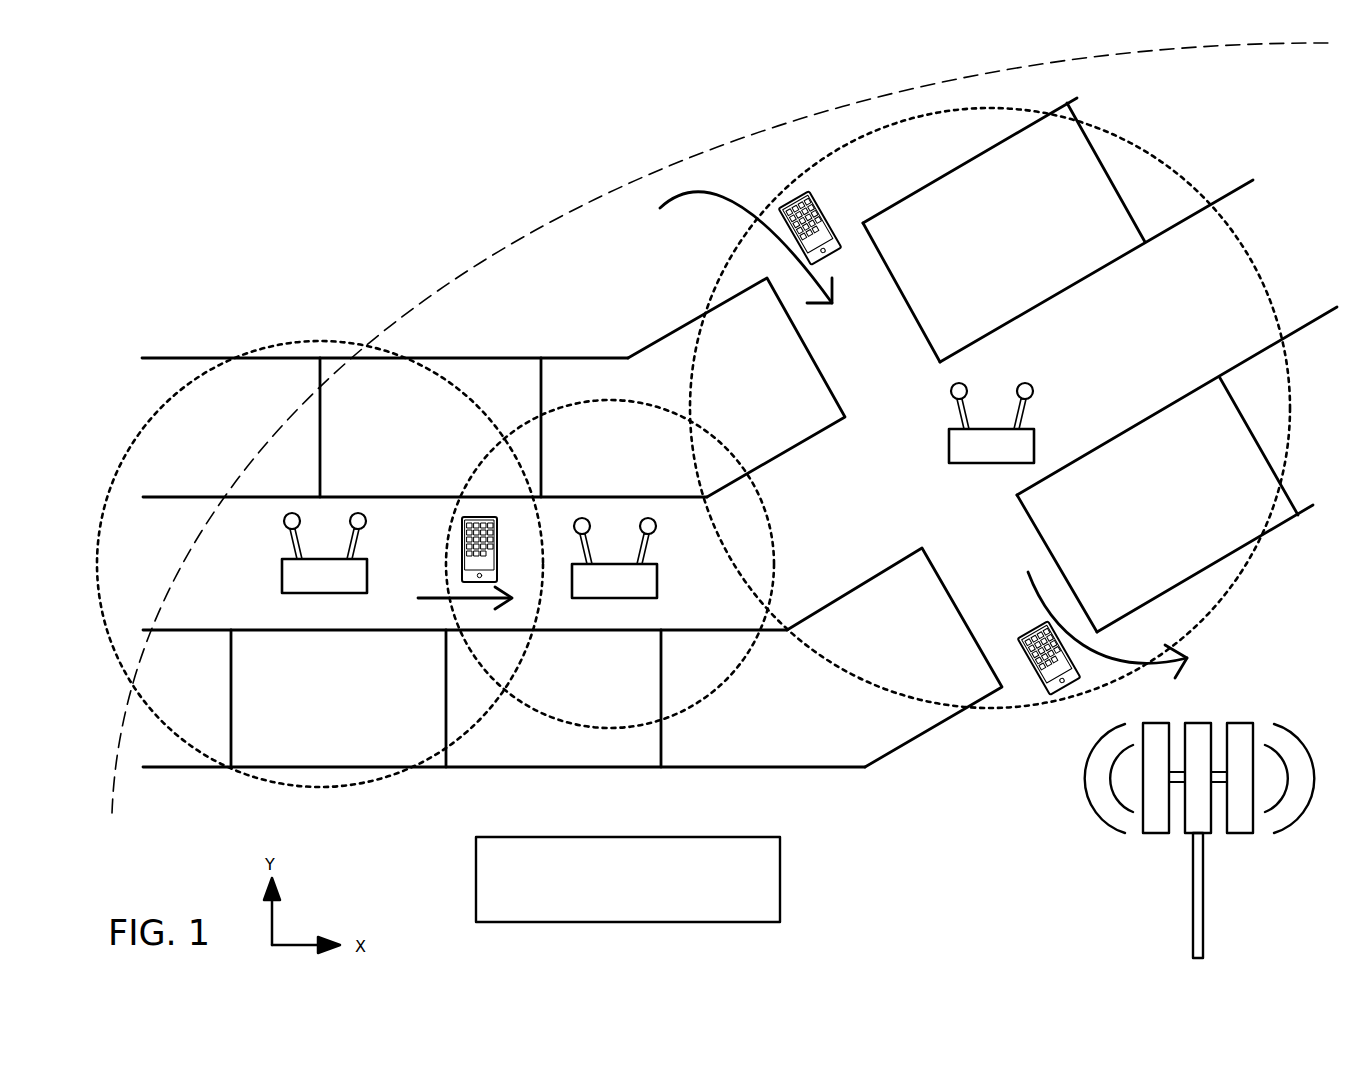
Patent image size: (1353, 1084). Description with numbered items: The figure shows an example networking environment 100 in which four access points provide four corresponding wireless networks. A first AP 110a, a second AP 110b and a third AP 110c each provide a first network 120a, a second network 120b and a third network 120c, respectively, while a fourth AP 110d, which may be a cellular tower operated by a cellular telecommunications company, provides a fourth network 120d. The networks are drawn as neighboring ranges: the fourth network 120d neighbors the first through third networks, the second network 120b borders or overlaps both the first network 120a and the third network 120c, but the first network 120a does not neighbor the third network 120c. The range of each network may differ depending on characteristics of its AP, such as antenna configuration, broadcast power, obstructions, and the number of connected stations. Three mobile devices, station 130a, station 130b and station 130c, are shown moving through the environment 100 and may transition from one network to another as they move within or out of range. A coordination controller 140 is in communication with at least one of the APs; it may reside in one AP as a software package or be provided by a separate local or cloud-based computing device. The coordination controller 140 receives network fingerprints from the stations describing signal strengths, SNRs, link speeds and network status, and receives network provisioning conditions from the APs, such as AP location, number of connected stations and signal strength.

The networking environment 100 is at (235, 166).
The first AP 110a is at (322, 594).
The second AP 110b is at (600, 600).
The third AP 110c is at (947, 464).
The fourth AP 110d is at (1193, 920).
The first network 120a is at (312, 343).
The second network 120b is at (723, 685).
The third network 120c is at (1148, 158).
The fourth network 120d is at (517, 242).
The station 130a is at (463, 517).
The station 130b is at (820, 203).
The station 130c is at (1020, 652).
The coordination controller 140 is at (628, 879).